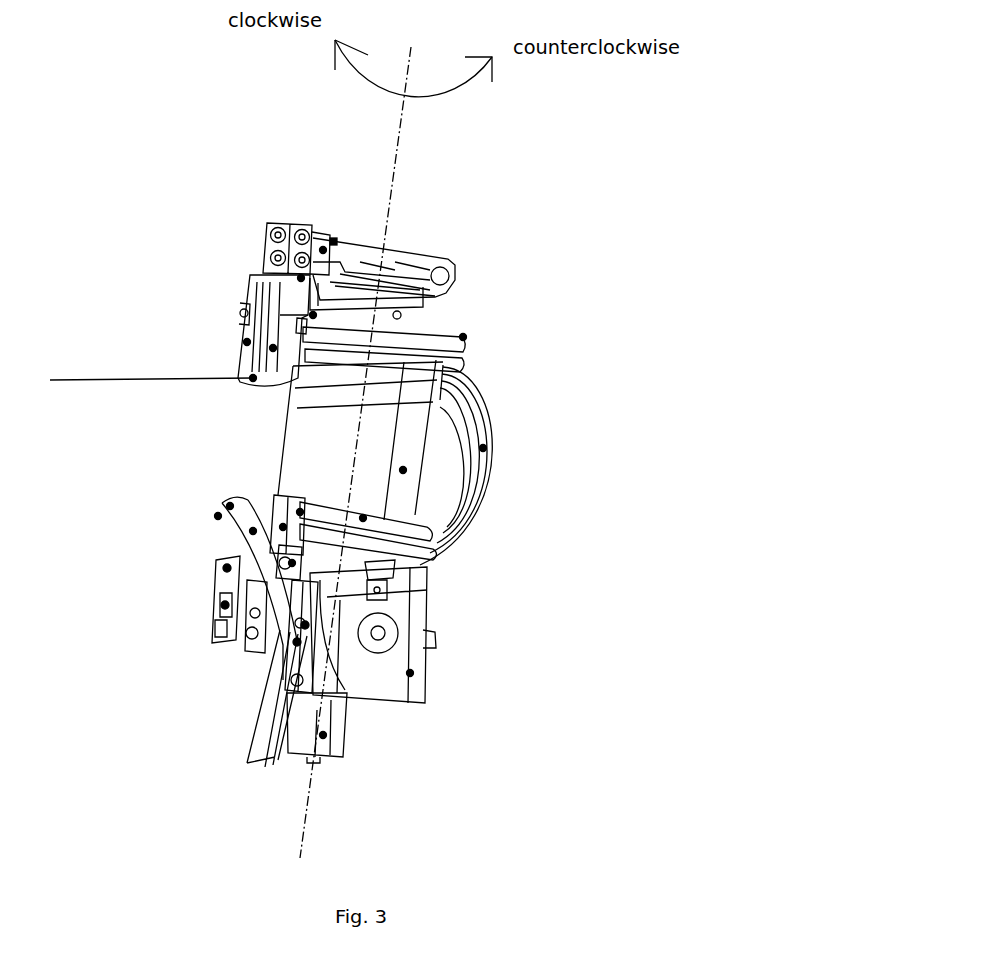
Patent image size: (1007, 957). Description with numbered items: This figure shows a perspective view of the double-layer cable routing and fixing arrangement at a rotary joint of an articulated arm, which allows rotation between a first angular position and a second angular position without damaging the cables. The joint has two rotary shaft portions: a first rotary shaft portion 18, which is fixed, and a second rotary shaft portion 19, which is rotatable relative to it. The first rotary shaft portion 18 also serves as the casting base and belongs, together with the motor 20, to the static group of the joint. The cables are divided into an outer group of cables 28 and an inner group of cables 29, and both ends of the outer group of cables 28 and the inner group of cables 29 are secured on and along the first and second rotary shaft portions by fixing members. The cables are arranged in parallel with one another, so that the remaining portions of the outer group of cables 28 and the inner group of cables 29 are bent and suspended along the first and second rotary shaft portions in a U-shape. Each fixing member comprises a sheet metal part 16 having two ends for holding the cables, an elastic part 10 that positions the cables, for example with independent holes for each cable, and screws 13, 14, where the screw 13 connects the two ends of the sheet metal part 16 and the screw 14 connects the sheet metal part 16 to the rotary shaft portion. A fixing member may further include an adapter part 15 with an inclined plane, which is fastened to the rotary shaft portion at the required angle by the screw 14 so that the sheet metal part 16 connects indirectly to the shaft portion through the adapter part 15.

The elastic part 10 is at (313, 315).
The screw 13 is at (292, 563).
The screw 14 is at (323, 250).
The adapter part 15 is at (337, 242).
The sheet metal part 16 is at (301, 278).
The first rotary shaft portion 18 is at (403, 470).
The second rotary shaft portion 19 is at (420, 267).
The motor 20 is at (323, 735).
The outer group of cables 28 is at (483, 448).
The inner group of cables 29 is at (463, 337).